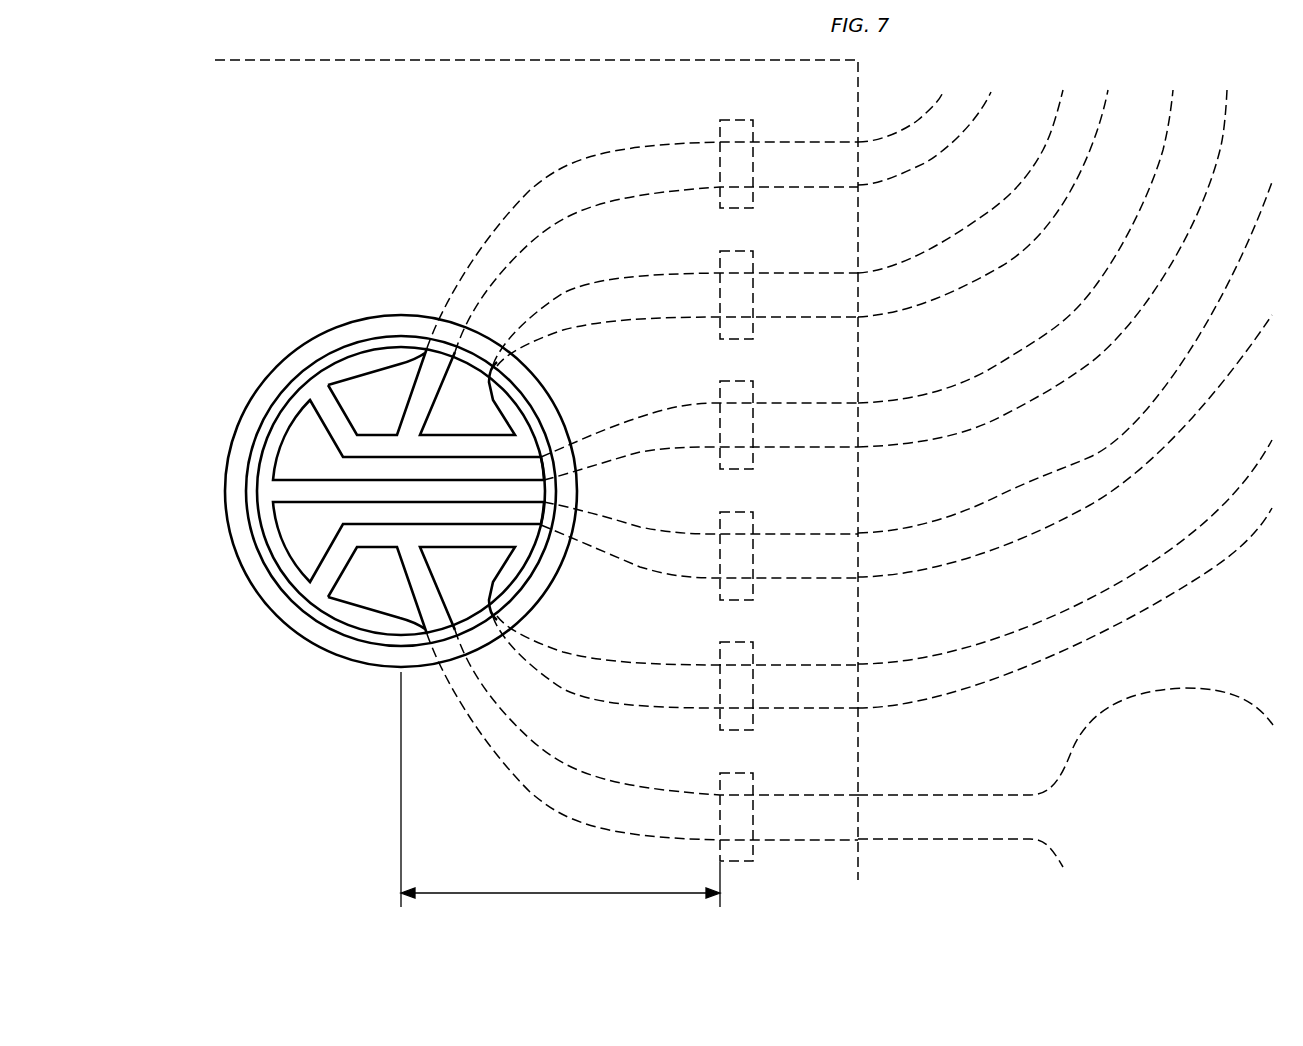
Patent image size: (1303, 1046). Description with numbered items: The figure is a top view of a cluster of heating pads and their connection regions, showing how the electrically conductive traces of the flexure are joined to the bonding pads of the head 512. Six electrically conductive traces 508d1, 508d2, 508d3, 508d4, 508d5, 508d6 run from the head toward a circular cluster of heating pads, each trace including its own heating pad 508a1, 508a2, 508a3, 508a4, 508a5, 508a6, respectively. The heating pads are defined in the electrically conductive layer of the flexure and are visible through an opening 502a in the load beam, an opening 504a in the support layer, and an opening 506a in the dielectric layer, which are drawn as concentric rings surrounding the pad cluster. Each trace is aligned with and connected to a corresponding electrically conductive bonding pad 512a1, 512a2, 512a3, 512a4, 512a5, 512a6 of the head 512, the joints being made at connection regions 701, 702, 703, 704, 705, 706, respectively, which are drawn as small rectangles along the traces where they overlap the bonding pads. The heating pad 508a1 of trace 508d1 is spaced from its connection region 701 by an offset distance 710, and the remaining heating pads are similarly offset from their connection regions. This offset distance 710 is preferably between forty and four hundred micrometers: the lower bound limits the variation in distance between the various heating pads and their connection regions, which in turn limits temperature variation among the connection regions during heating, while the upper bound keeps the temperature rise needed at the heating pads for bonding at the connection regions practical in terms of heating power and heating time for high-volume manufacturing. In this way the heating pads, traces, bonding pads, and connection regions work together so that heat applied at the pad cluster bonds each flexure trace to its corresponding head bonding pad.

The head 512 is at (405, 104).
The electrically conductive bonding pad 512a1 is at (737, 783).
The electrically conductive bonding pad 512a2 is at (737, 653).
The electrically conductive bonding pad 512a3 is at (737, 523).
The electrically conductive bonding pad 512a4 is at (737, 392).
The electrically conductive bonding pad 512a5 is at (737, 262).
The electrically conductive bonding pad 512a6 is at (737, 132).
The connection region 701 is at (758, 853).
The connection region 702 is at (724, 708).
The connection region 703 is at (724, 578).
The connection region 704 is at (724, 448).
The connection region 705 is at (724, 318).
The connection region 706 is at (724, 188).
The heating pad 508a1 is at (345, 597).
The heating pad 508a2 is at (493, 561).
The heating pad 508a3 is at (292, 530).
The heating pad 508a4 is at (292, 452).
The heating pad 508a5 is at (493, 421).
The heating pad 508a6 is at (345, 400).
The electrically conductive trace 508d1 is at (937, 818).
The electrically conductive trace 508d2 is at (1003, 663).
The electrically conductive trace 508d3 is at (1023, 523).
The electrically conductive trace 508d4 is at (1013, 373).
The electrically conductive trace 508d5 is at (973, 248).
The electrically conductive trace 508d6 is at (922, 137).
The opening in the load beam 502a is at (285, 626).
The opening in the support layer 504a is at (336, 637).
The opening in the dielectric layer 506a is at (301, 380).
The offset distance 710 is at (507, 893).